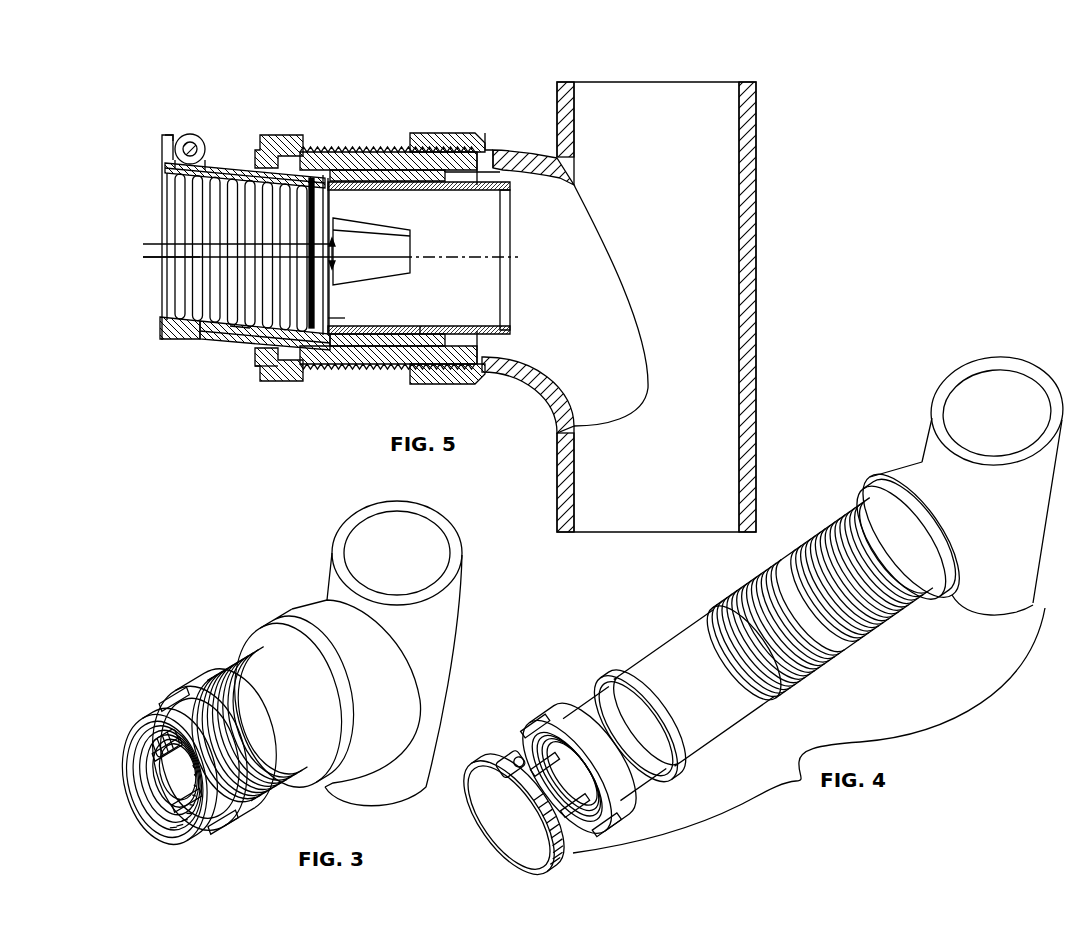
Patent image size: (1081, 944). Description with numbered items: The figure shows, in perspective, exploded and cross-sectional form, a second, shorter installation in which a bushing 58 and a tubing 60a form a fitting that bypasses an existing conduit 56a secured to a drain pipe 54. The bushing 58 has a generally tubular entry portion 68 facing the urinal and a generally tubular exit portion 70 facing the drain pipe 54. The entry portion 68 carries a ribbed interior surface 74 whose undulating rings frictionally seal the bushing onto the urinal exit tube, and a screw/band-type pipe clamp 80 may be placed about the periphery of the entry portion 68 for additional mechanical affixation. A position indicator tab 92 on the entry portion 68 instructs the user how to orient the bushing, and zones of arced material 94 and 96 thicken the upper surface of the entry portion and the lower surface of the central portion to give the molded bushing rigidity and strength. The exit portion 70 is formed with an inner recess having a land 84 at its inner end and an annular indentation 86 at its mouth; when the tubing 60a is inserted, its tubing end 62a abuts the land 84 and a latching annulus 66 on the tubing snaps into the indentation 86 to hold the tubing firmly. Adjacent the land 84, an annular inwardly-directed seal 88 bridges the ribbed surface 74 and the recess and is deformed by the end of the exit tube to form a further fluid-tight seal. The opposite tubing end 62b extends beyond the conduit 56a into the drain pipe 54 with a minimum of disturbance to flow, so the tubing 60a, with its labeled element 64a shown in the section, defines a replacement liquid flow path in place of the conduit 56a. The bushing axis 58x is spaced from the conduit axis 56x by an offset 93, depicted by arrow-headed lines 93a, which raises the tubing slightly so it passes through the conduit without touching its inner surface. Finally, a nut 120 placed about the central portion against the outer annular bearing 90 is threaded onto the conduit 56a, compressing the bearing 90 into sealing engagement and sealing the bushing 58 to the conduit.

In FIG. 5, the drain pipe 54 is at (758, 255).
In FIG. 3, the drain pipe 54 is at (453, 641).
In FIG. 4, the drain pipe 54 is at (967, 368).
In FIG. 5, the conduit 56a is at (380, 150).
In FIG. 3, the conduit 56a is at (215, 667).
In FIG. 4, the conduit 56a is at (907, 539).
In FIG. 5, the conduit axis 56x is at (150, 258).
In FIG. 5, the bushing 58 is at (217, 353).
In FIG. 3, the bushing 58 is at (138, 737).
In FIG. 4, the bushing 58 is at (733, 729).
In FIG. 5, the bushing axis 58x is at (157, 244).
In FIG. 5, the tubing 60a is at (512, 268).
In FIG. 5, the tubing end 62a is at (330, 186).
In FIG. 5, the tubing end 62b is at (511, 190).
In FIG. 5, the sleeve bore 64a is at (510, 306).
In FIG. 5, the latching annulus 66 is at (427, 328).
In FIG. 5, the entry portion 68 is at (164, 343).
In FIG. 5, the exit portion 70 is at (340, 170).
In FIG. 5, the ribbed interior surface 74 is at (214, 207).
In FIG. 5, the pipe clamp 80 is at (188, 133).
In FIG. 3, the pipe clamp 80 is at (152, 717).
In FIG. 4, the pipe clamp 80 is at (510, 750).
In FIG. 5, the land 84 is at (338, 323).
In FIG. 5, the annular indentation 86 is at (433, 180).
In FIG. 5, the seal 88 is at (333, 320).
In FIG. 5, the annular bearing 90 is at (265, 362).
In FIG. 4, the annular bearing 90 is at (632, 667).
In FIG. 5, the position indicator tab 92 is at (170, 134).
In FIG. 5, the offset 93 is at (335, 254).
In FIG. 5, the arrow-headed lines 93a is at (338, 258).
In FIG. 5, the zone of arced material 94 is at (214, 341).
In FIG. 5, the zone of arced material 96 is at (230, 352).
In FIG. 5, the nut 120 is at (273, 134).
In FIG. 3, the nut 120 is at (187, 683).
In FIG. 4, the nut 120 is at (558, 705).